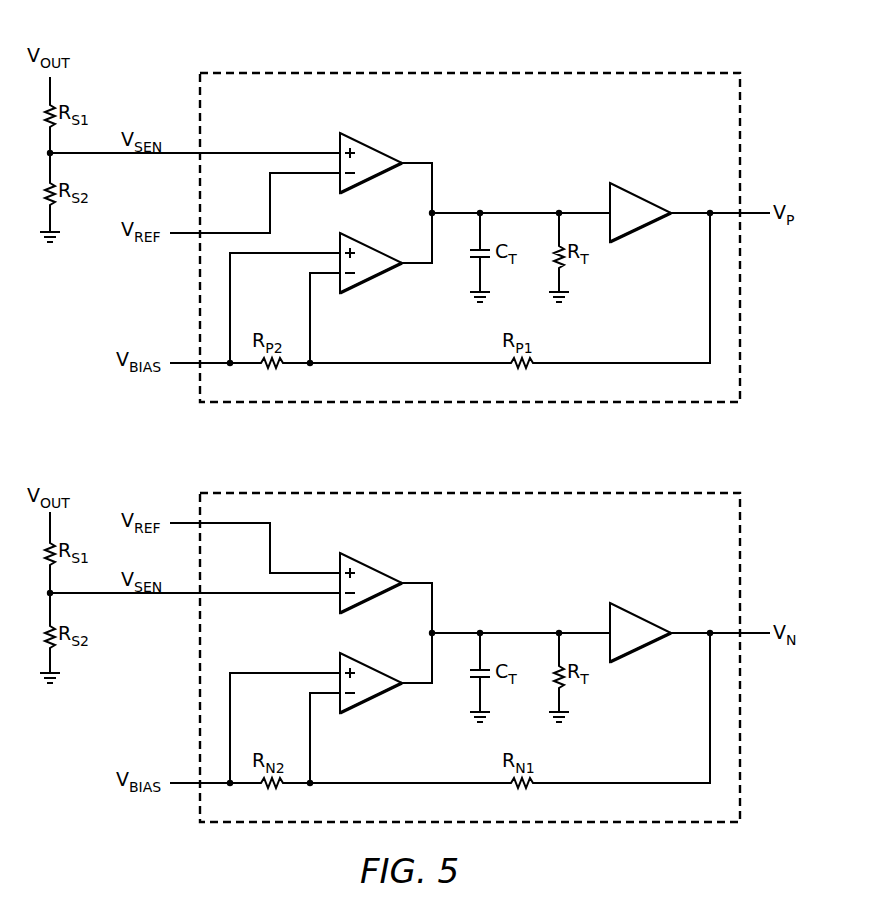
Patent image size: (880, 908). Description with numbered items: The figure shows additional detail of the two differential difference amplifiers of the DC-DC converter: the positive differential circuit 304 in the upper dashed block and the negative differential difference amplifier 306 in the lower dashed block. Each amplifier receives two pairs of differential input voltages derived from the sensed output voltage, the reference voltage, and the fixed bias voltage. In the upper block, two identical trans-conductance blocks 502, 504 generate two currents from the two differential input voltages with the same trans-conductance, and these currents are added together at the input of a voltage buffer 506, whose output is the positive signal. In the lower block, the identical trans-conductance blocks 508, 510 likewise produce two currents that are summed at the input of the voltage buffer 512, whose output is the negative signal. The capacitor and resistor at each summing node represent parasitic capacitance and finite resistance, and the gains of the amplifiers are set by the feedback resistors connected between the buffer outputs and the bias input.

The positive differential circuit 304 is at (527, 64).
The differential difference amplifier 306 is at (527, 484).
The trans-conductance block 502 is at (372, 147).
The trans-conductance block 504 is at (370, 283).
The voltage buffer 506 is at (641, 197).
The trans-conductance block 508 is at (372, 567).
The trans-conductance block 510 is at (370, 703).
The voltage buffer 512 is at (641, 617).